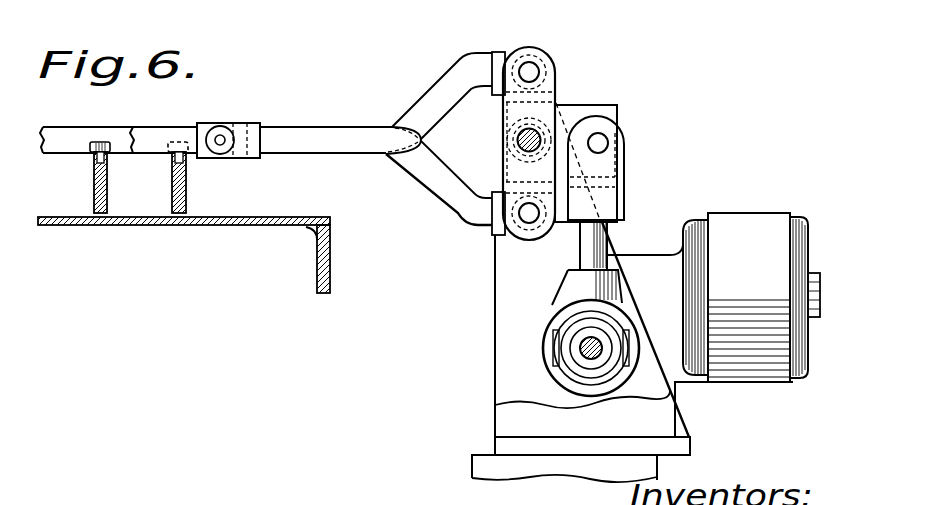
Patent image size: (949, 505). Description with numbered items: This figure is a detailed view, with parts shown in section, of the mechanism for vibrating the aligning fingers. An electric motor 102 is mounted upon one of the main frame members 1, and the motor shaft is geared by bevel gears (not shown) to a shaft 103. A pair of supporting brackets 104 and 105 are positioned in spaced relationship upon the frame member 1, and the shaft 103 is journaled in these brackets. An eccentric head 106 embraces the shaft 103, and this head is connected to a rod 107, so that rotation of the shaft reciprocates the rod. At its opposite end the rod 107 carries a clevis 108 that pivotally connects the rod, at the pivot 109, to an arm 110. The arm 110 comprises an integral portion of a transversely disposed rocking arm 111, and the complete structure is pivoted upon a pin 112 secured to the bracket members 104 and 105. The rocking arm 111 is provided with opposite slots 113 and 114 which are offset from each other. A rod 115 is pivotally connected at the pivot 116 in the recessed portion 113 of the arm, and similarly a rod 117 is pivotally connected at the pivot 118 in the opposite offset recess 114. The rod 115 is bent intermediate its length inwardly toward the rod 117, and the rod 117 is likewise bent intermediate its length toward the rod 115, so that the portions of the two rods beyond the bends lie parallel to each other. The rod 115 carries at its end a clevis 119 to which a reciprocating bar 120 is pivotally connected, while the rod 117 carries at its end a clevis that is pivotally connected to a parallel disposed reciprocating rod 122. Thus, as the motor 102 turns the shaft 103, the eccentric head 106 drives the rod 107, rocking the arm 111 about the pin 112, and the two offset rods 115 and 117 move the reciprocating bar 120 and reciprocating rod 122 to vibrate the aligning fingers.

The main frame member 1 is at (478, 467).
The electric motor 102 is at (765, 388).
The shaft 103 is at (592, 356).
The supporting bracket 104 is at (497, 307).
The supporting bracket 105 is at (500, 420).
The eccentric head 106 is at (552, 318).
The rod 107 is at (607, 237).
The clevis 108 is at (623, 180).
The pivotal connection 109 is at (606, 138).
The arm 110 is at (586, 108).
The rocking arm 111 is at (557, 103).
The pin 112 is at (518, 138).
The slot 113 is at (500, 97).
The slot 114 is at (492, 222).
The rod 115 is at (412, 105).
The pivotal connection 116 is at (529, 62).
The rod 117 is at (421, 188).
The pivotal connection 118 is at (527, 218).
The clevis 119 is at (248, 123).
The reciprocating bar 120 is at (118, 127).
The reciprocating rod 122 is at (163, 127).